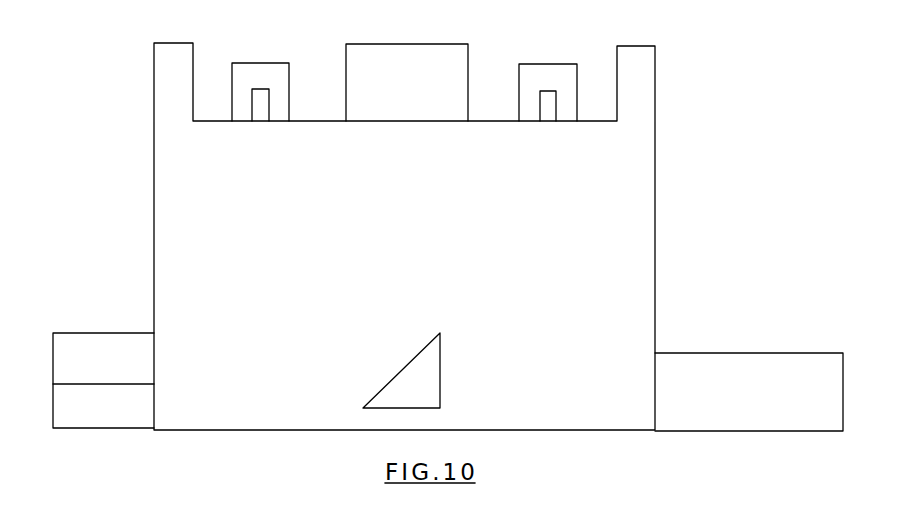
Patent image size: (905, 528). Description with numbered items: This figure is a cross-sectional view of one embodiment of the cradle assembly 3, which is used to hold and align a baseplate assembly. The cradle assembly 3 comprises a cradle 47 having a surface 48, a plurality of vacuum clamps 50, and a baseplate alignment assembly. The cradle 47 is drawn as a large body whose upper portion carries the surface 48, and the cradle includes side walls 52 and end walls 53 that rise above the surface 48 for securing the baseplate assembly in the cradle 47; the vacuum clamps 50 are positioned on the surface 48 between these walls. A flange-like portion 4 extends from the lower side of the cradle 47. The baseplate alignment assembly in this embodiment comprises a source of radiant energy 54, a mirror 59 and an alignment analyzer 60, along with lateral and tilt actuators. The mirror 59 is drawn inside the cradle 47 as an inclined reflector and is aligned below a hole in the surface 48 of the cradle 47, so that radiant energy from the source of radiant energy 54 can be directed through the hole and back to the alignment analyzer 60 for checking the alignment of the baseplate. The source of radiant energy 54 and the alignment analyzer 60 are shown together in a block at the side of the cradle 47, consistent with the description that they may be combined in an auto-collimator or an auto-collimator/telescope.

The cradle assembly 3 is at (653, 38).
The base flange 4 is at (716, 353).
The cradle 47 is at (153, 133).
The surface 48 is at (333, 121).
The vacuum clamps 50 is at (255, 63).
The side walls 52 is at (400, 44).
The end walls 53 is at (163, 67).
The source of radiant energy 54 is at (53, 341).
The mirror 59 is at (408, 362).
The alignment analyzer 60 is at (53, 420).